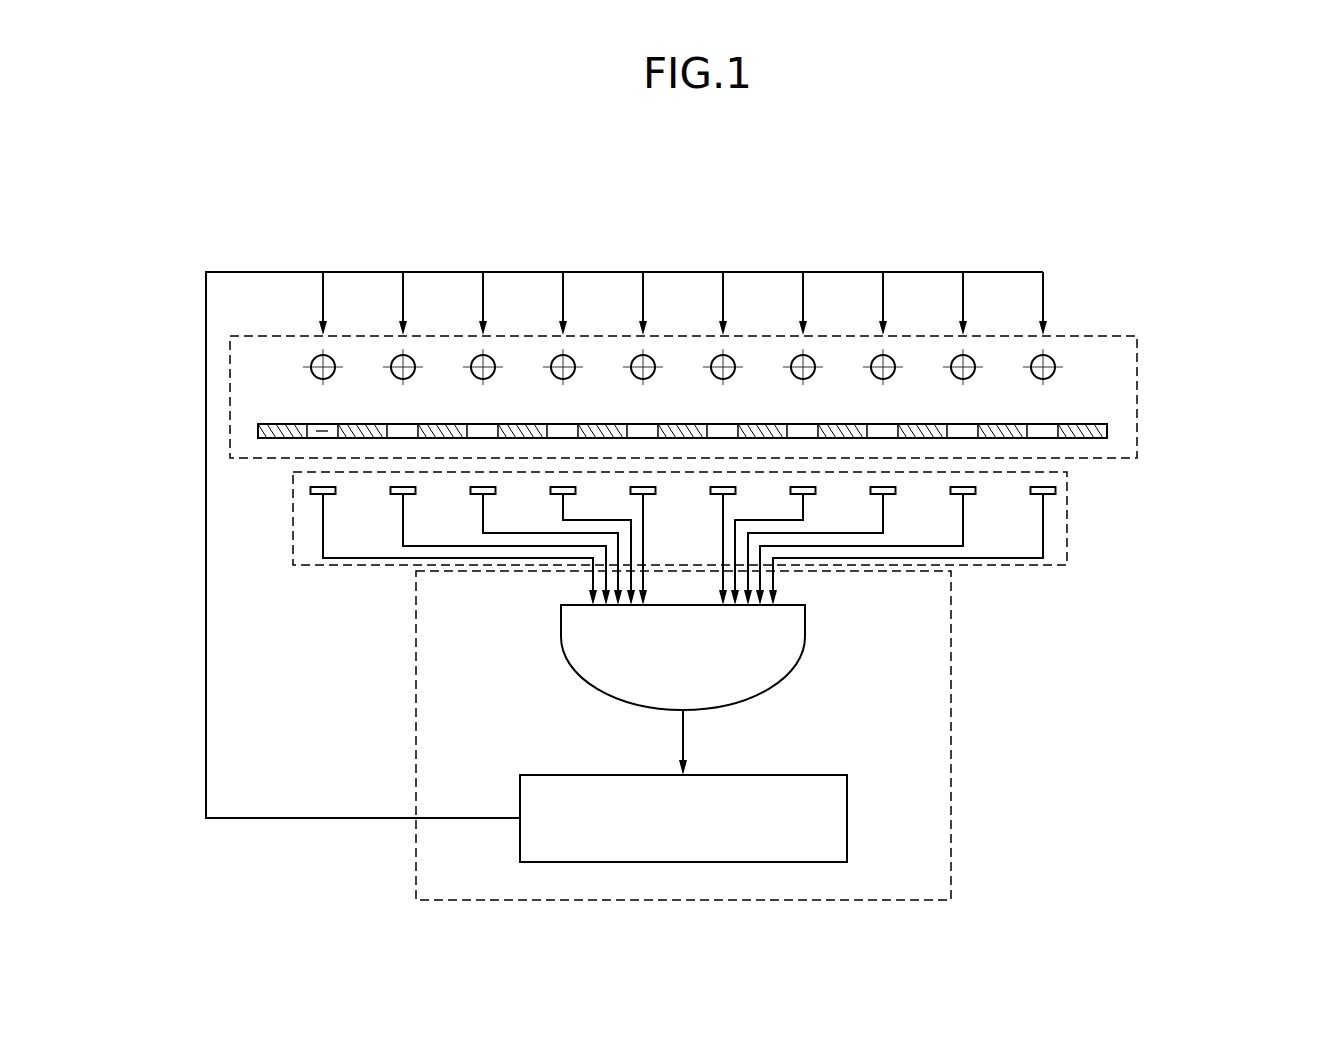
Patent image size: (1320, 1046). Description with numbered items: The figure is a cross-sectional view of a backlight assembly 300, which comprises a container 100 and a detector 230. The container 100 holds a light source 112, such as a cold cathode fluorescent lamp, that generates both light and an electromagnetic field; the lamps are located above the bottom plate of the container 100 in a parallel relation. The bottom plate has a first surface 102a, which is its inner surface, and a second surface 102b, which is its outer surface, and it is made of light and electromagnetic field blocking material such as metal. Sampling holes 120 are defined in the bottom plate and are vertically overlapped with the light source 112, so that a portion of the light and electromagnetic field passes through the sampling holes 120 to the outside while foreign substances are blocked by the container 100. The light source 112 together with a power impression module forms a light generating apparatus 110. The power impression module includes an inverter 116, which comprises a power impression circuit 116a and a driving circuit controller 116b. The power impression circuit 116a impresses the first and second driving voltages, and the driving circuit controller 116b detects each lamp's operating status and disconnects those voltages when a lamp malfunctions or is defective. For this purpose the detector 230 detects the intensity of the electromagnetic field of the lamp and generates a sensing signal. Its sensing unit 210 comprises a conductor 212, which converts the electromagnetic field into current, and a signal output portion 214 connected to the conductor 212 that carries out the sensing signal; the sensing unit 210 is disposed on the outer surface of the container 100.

The container 100 is at (1137, 433).
The first surface 102a is at (1088, 424).
The second surface 102b is at (1087, 438).
The light generating apparatus 110 is at (748, 328).
The light source 112 is at (1052, 376).
The sampling holes 120 is at (320, 424).
The sensing unit 210 is at (752, 556).
The conductor 212 is at (1050, 494).
The signal output portion 214 is at (1003, 566).
The detector 230 is at (310, 566).
The backlight assembly 300 is at (1258, 355).
The inverter 116 is at (951, 776).
The power impression circuit 116a is at (820, 775).
The driving circuit controller 116b is at (805, 637).